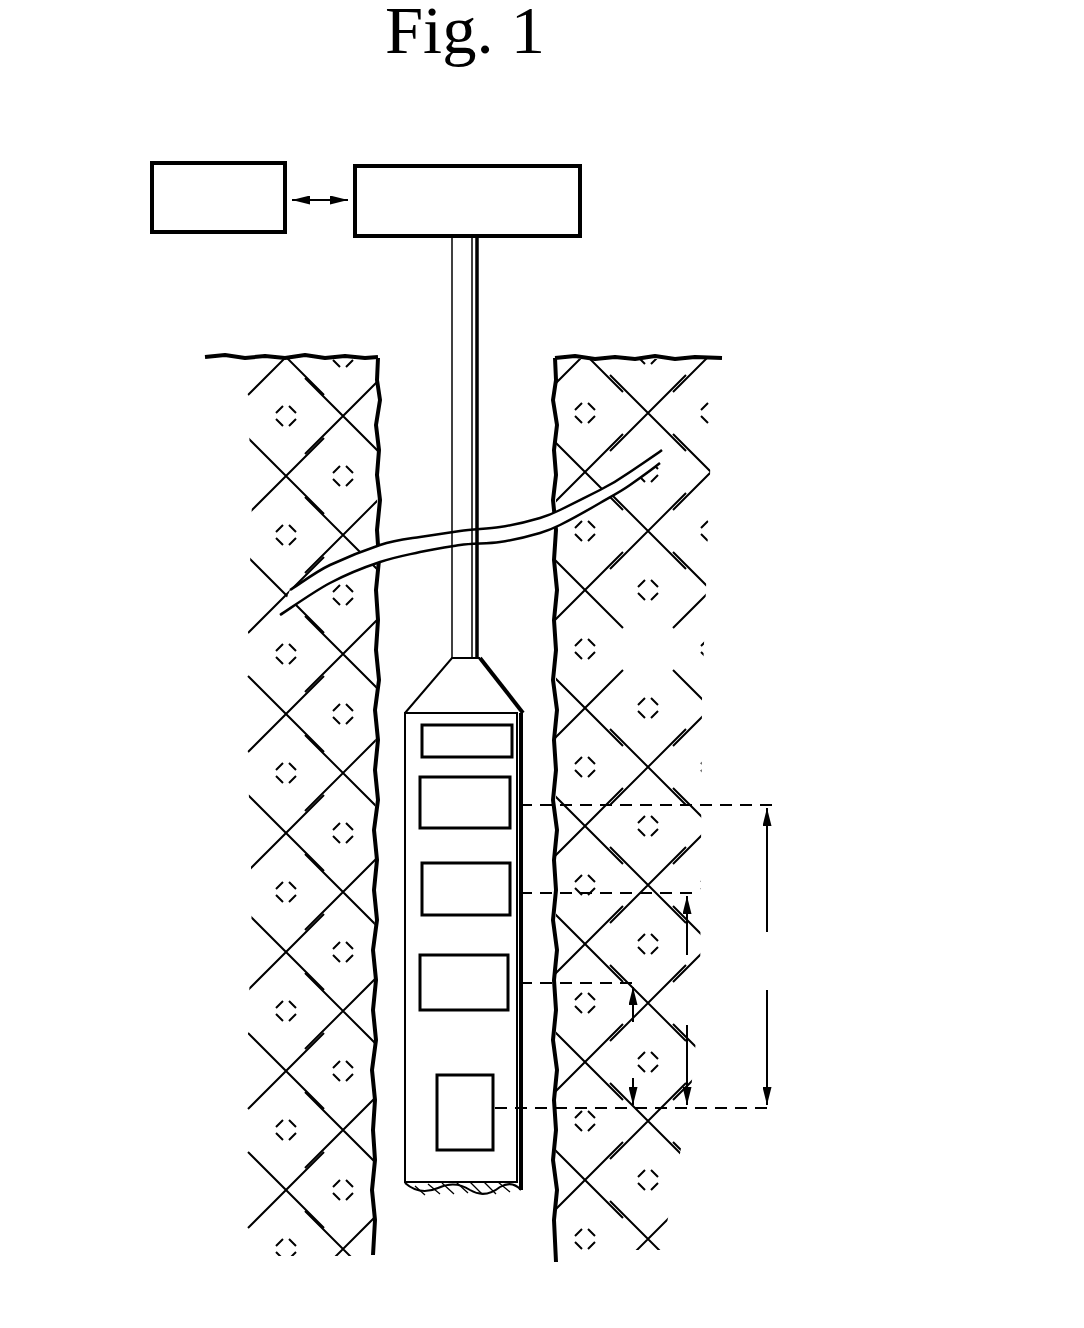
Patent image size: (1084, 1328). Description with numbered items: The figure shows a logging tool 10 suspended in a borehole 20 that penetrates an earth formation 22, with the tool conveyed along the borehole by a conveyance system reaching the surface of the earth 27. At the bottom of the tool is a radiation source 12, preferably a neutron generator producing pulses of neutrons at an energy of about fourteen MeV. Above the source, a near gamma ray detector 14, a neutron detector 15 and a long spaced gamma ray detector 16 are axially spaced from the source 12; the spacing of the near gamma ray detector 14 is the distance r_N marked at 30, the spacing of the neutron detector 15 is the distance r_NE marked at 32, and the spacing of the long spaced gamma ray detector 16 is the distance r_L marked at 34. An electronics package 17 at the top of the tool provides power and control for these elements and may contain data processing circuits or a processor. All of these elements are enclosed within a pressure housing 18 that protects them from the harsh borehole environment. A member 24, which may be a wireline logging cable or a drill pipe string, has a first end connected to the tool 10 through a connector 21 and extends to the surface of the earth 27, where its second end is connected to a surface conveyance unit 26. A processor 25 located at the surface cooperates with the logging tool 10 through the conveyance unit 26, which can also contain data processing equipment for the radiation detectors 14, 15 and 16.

The logging tool 10 is at (461, 956).
The radiation source 12 is at (436, 1106).
The near gamma ray detector 14 is at (420, 977).
The neutron detector 15 is at (428, 887).
The long spaced gamma ray detector 16 is at (420, 802).
The electronics package 17 is at (514, 742).
The pressure housing 18 is at (526, 774).
The borehole 20 is at (522, 454).
The connector 21 is at (445, 690).
The earth formation 22 is at (289, 663).
The member 24 is at (487, 356).
The processor 25 is at (247, 223).
The conveyance unit 26 is at (582, 205).
The surface of the earth 27 is at (283, 356).
The distance r_N 30 is at (640, 1078).
The distance r_NE 32 is at (693, 1078).
The distance r_L 34 is at (772, 1078).